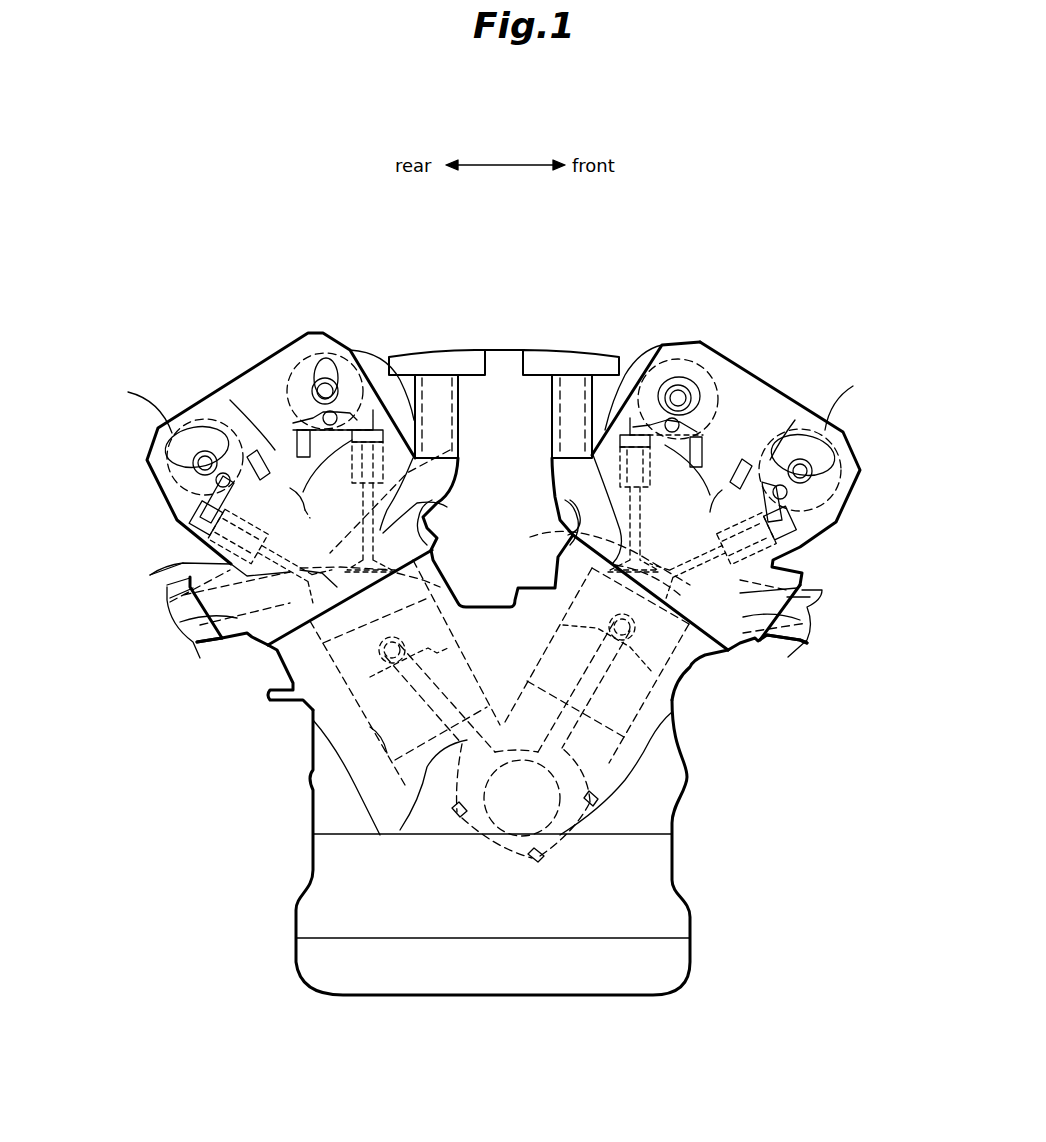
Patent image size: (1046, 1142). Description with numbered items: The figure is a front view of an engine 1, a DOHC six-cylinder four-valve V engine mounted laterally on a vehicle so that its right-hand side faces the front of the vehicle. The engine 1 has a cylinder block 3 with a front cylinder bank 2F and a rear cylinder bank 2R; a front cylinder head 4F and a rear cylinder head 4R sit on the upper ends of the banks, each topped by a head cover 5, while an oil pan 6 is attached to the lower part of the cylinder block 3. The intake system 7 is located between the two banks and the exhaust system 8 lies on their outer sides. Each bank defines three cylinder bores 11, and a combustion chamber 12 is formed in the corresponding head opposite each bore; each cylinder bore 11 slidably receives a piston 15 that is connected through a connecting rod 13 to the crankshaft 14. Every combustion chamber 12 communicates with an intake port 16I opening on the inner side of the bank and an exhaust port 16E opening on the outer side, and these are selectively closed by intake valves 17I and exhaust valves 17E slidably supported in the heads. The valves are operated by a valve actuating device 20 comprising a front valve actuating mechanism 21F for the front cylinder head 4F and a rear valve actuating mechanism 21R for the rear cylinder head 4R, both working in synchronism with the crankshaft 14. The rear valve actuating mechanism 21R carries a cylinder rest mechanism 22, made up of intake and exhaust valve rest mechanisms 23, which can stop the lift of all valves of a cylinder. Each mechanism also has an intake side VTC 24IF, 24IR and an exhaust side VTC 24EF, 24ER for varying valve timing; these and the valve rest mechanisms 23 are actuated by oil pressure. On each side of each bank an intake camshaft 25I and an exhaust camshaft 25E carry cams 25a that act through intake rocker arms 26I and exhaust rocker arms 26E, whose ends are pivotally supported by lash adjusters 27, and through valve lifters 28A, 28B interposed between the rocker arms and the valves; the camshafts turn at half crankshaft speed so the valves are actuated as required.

The engine 1 is at (651, 262).
The front cylinder bank 2F is at (702, 674).
The rear cylinder bank 2R is at (262, 662).
The cylinder block 3 is at (337, 735).
The front cylinder head 4F is at (777, 573).
The rear cylinder head 4R is at (225, 562).
The head cover 5 is at (232, 402).
The oil pan 6 is at (318, 968).
The intake system 7 is at (512, 325).
The exhaust system 8 is at (207, 652).
The cylinder bore 11 is at (310, 798).
The combustion chamber 12 is at (520, 571).
The connecting rod 13 is at (400, 830).
The crankshaft 14 is at (557, 843).
The piston 15 is at (297, 717).
The exhaust port 16E is at (180, 625).
The intake port 16I is at (535, 498).
The exhaust valve 17E is at (150, 570).
The intake valve 17I is at (530, 537).
The valve actuating device 20 is at (784, 312).
The front valve actuating mechanism 21F is at (772, 410).
The rear valve actuating mechanism 21R is at (247, 387).
The cylinder rest mechanism 22 is at (442, 448).
The valve rest mechanism 23 is at (375, 425).
The exhaust side VTC 24EF is at (866, 373).
The exhaust side VTC 24ER is at (128, 392).
The intake side VTC 24IF is at (643, 385).
The intake side VTC 24IR is at (380, 422).
The cam 25a is at (313, 380).
The exhaust camshaft 25E is at (190, 446).
The intake camshaft 25I is at (326, 385).
The exhaust rocker arm 26E is at (178, 477).
The intake rocker arm 26I is at (337, 412).
The lash adjuster 27 is at (293, 458).
The valve lifter 28A is at (360, 482).
The valve lifter 28B is at (692, 500).